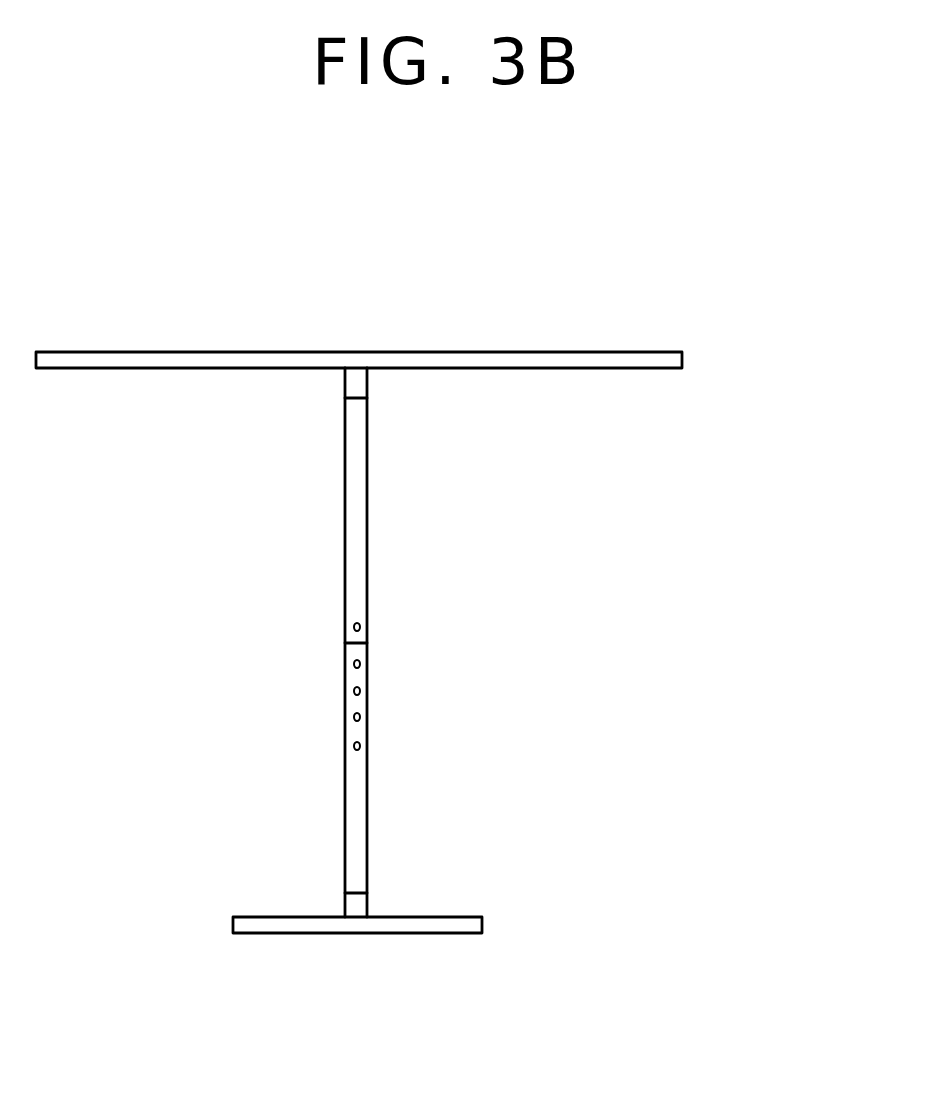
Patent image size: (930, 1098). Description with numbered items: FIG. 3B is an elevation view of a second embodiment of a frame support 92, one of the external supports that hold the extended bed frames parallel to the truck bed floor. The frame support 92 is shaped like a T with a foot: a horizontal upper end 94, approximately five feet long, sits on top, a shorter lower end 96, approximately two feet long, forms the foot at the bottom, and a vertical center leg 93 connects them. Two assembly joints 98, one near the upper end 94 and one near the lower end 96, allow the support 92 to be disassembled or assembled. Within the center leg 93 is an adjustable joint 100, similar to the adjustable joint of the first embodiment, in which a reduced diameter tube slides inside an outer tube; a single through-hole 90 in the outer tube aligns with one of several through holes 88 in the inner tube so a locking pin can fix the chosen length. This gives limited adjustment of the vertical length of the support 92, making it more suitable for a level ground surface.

The frame support 92 is at (548, 298).
The upper end 94 is at (200, 350).
The lower end 96 is at (458, 915).
The center leg 93 is at (345, 505).
The assembly joints 98 is at (366, 403).
The adjustable joint 100 is at (345, 640).
The through-hole 90 is at (362, 625).
The through holes 88 is at (365, 664).